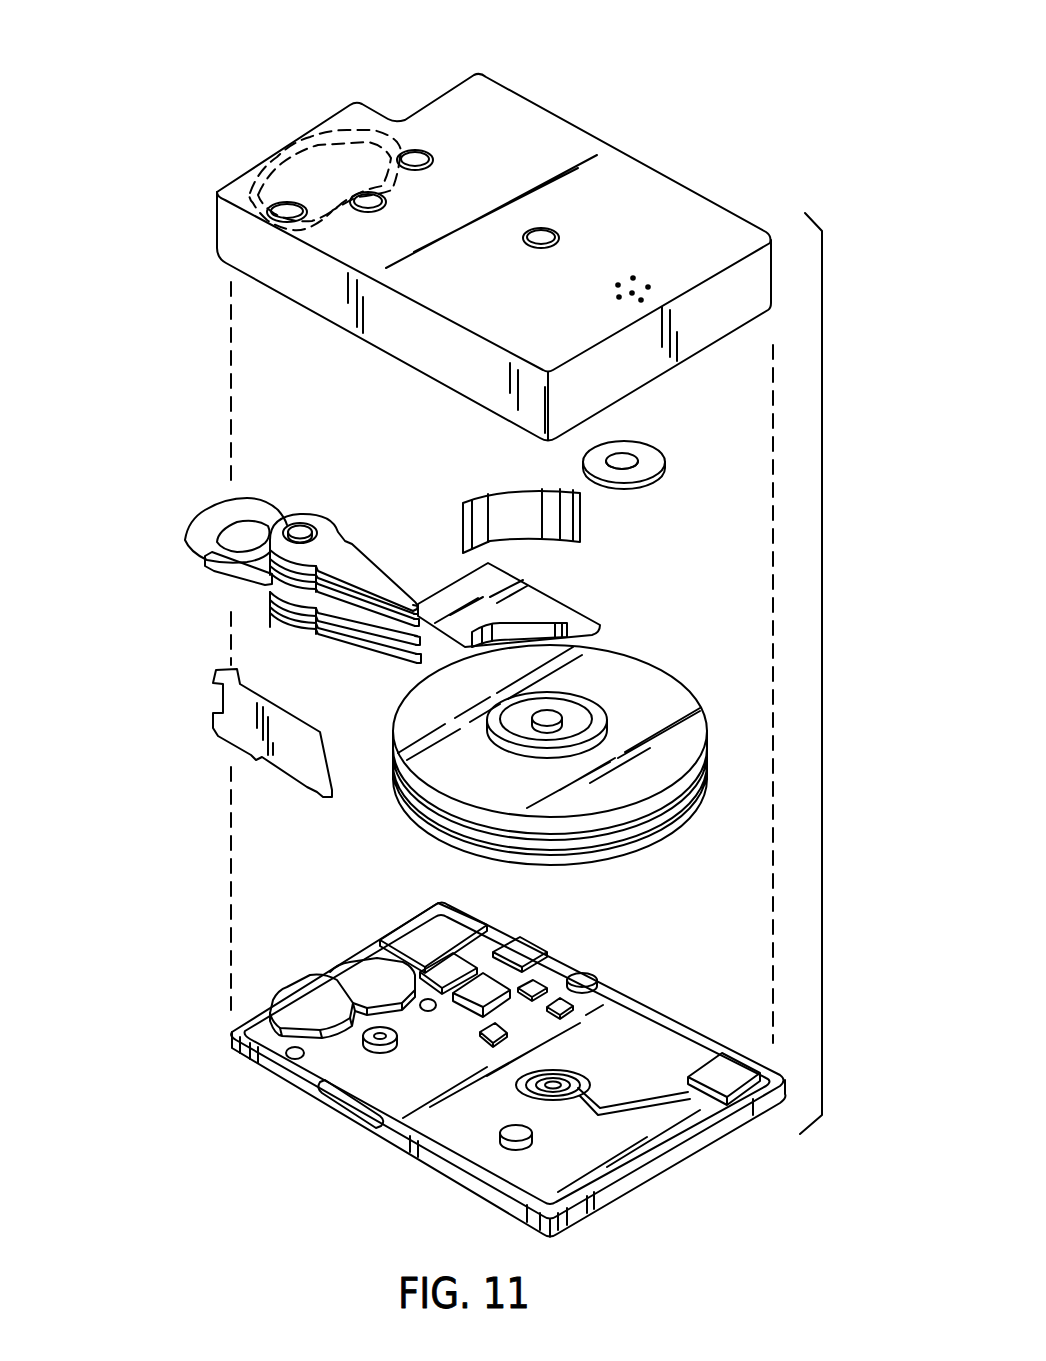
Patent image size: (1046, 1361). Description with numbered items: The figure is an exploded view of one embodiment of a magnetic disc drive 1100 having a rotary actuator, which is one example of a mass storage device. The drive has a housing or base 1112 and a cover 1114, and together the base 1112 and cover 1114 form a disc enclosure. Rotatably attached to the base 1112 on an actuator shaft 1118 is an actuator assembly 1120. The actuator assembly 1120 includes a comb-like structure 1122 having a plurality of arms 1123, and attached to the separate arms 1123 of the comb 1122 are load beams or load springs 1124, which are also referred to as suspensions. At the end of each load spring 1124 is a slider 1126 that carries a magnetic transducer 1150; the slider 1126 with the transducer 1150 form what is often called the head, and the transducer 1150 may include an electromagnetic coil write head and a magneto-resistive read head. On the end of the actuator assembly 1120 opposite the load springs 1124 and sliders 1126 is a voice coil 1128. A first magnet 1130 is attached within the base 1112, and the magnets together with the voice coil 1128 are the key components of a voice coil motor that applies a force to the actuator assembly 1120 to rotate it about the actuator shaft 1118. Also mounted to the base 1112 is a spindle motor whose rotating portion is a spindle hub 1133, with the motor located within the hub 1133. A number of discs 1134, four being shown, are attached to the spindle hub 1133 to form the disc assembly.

The magnetic disc drive 1100 is at (652, 96).
The base 1112 is at (673, 1040).
The cover 1114 is at (657, 200).
The actuator shaft 1118 is at (303, 528).
The actuator assembly 1120 is at (250, 580).
The comb-like structure 1122 is at (323, 637).
The arms 1123 is at (342, 542).
The load springs 1124 is at (370, 573).
The slider 1126 is at (412, 604).
The voice coil 1128 is at (207, 530).
The first magnet 1130 is at (325, 140).
The spindle hub 1133 is at (555, 710).
The discs 1134 is at (673, 700).
The magnetic transducer 1150 is at (418, 606).